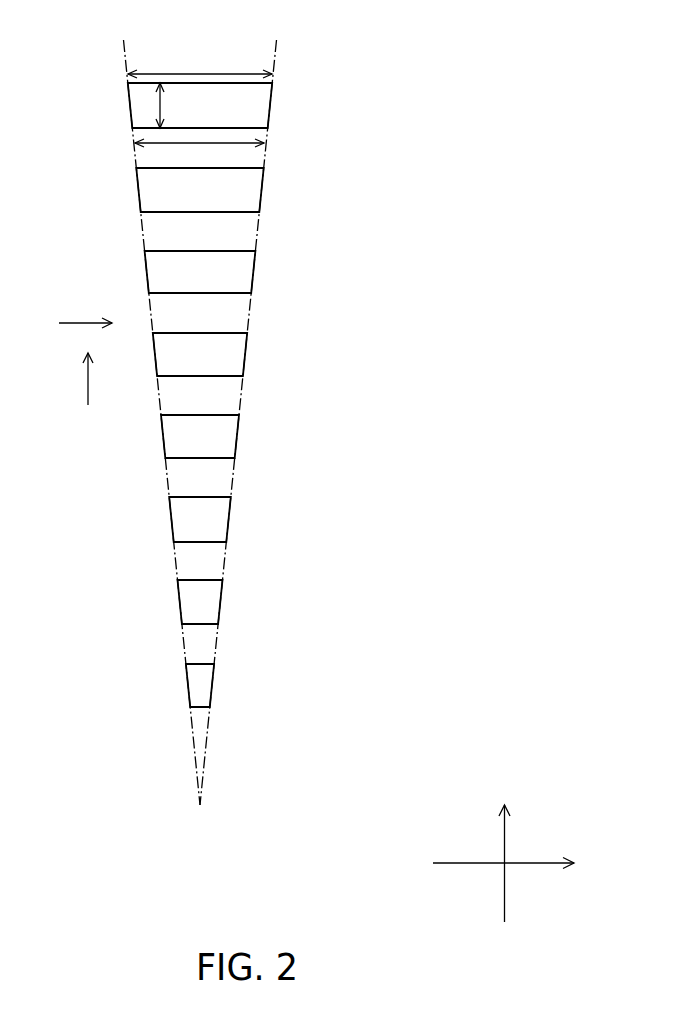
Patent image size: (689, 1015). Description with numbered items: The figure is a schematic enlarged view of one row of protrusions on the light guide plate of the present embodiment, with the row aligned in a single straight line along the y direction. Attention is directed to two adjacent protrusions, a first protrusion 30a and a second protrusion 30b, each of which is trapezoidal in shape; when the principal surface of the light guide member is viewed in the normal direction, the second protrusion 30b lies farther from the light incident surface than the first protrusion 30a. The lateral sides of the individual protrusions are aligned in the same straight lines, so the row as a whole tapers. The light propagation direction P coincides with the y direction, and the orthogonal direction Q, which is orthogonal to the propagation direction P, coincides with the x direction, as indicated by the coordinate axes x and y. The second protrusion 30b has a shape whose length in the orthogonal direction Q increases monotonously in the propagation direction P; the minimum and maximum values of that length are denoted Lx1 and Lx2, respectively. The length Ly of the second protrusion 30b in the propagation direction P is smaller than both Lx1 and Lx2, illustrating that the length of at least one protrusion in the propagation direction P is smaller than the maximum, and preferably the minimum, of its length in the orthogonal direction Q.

The second protrusion 30b is at (270, 107).
The first protrusion 30a is at (262, 190).
The maximum length in orthogonal direction Lx2 is at (175, 73).
The minimum length in orthogonal direction Lx1 is at (173, 142).
The length in propagation direction Ly is at (177, 105).
The orthogonal direction Q is at (74, 323).
The light propagation direction P is at (79, 379).
The x direction x is at (516, 864).
The y direction y is at (506, 846).